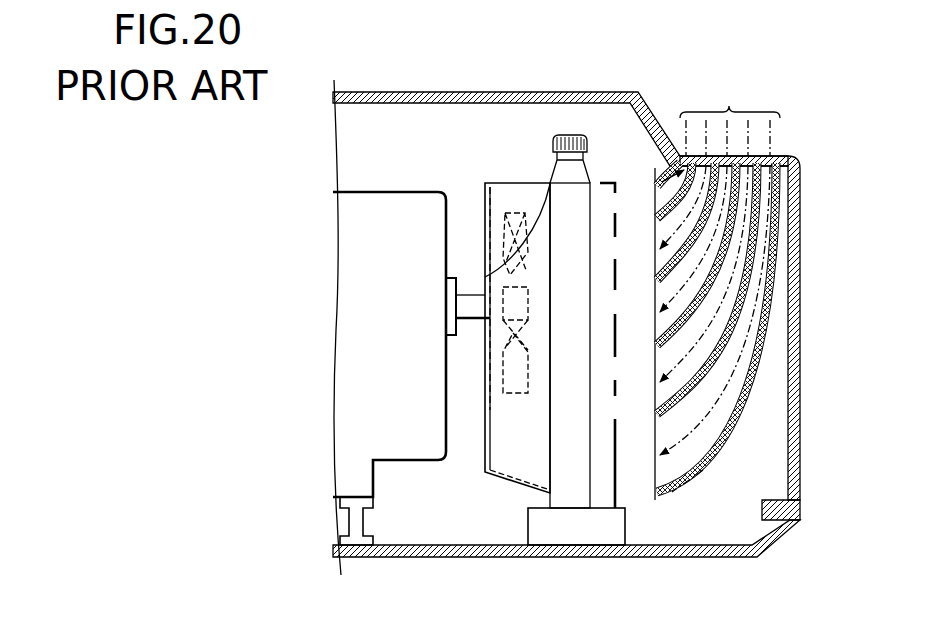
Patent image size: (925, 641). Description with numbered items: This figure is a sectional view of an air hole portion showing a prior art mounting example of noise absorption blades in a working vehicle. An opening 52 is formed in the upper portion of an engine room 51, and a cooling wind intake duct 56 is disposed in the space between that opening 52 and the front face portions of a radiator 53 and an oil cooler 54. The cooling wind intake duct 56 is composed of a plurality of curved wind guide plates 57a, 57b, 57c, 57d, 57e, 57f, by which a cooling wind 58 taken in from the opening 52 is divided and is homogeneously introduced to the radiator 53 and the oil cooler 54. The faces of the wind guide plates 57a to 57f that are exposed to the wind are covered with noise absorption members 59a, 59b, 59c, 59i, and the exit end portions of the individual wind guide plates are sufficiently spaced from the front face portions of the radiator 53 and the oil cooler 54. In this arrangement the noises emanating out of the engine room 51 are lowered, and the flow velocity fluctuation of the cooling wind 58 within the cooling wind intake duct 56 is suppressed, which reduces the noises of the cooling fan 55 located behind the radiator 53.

The engine room 51 is at (429, 116).
The opening 52 is at (799, 150).
The radiator 53 is at (540, 185).
The oil cooler 54 is at (597, 185).
The cooling fan 55 is at (522, 212).
The cooling wind intake duct 56 is at (778, 347).
The wind guide plate 57a is at (702, 476).
The wind guide plate 57b is at (693, 402).
The wind guide plate 57c is at (664, 340).
The wind guide plate 57d is at (666, 275).
The wind guide plate 57e is at (664, 225).
The wind guide plate 57f is at (667, 180).
The cooling wind 58 is at (730, 98).
The noise absorption member 59a is at (684, 494).
The noise absorption member 59b is at (715, 432).
The noise absorption member 59c is at (672, 398).
The noise absorption member 59i is at (662, 170).